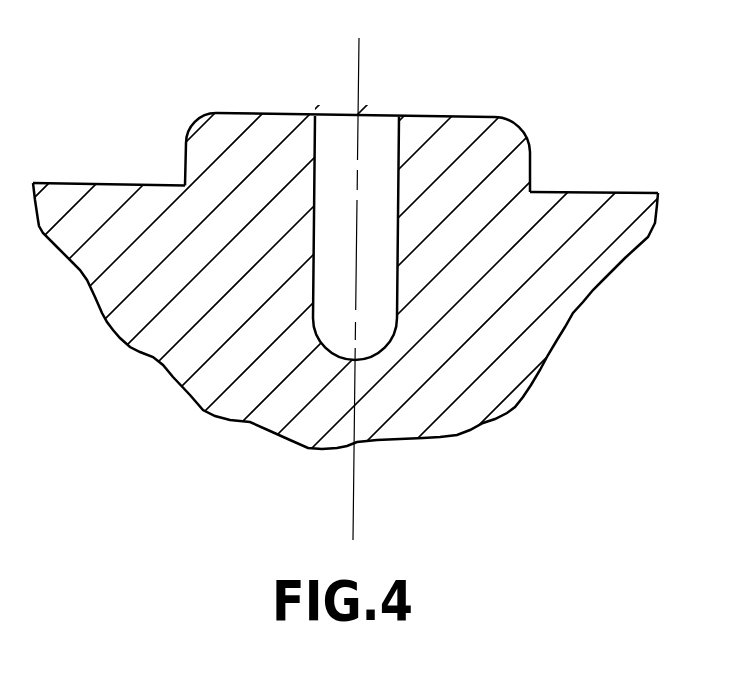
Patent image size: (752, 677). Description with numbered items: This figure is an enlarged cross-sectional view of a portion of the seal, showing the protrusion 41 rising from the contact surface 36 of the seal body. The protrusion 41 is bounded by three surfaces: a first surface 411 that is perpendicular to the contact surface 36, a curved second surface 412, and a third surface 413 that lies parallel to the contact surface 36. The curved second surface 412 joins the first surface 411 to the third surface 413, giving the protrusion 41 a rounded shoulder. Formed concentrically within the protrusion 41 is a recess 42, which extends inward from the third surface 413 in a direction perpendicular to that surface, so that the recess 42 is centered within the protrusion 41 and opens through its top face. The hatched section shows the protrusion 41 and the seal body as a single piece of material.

The contact surface 36 is at (118, 183).
The protrusion 41 is at (195, 115).
The recess 42 is at (338, 137).
The first surface 411 is at (533, 177).
The second surface 412 is at (520, 125).
The third surface 413 is at (453, 117).